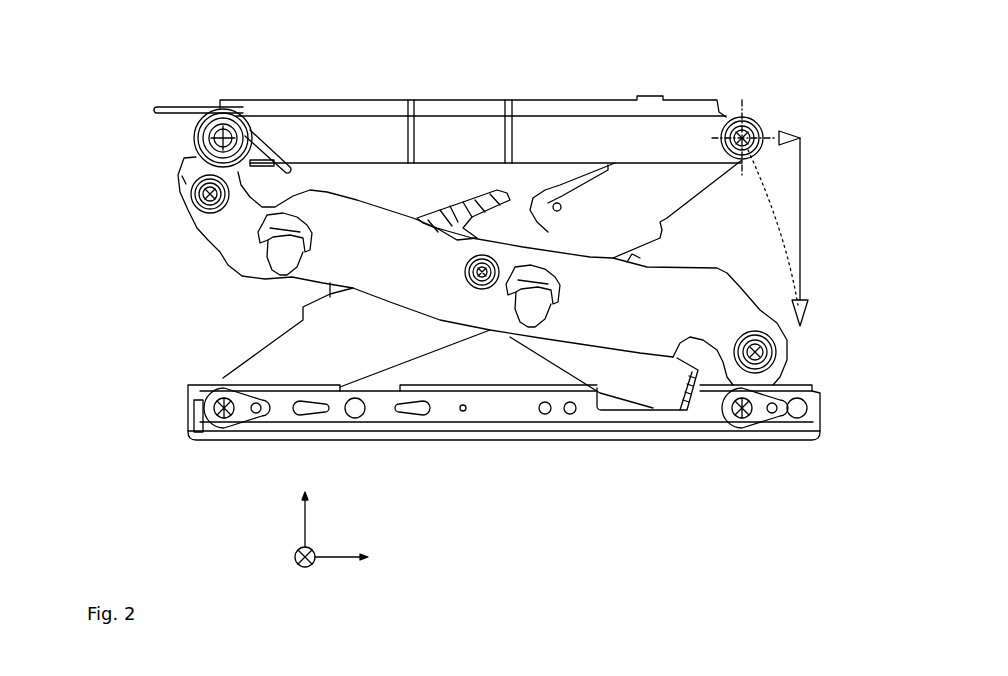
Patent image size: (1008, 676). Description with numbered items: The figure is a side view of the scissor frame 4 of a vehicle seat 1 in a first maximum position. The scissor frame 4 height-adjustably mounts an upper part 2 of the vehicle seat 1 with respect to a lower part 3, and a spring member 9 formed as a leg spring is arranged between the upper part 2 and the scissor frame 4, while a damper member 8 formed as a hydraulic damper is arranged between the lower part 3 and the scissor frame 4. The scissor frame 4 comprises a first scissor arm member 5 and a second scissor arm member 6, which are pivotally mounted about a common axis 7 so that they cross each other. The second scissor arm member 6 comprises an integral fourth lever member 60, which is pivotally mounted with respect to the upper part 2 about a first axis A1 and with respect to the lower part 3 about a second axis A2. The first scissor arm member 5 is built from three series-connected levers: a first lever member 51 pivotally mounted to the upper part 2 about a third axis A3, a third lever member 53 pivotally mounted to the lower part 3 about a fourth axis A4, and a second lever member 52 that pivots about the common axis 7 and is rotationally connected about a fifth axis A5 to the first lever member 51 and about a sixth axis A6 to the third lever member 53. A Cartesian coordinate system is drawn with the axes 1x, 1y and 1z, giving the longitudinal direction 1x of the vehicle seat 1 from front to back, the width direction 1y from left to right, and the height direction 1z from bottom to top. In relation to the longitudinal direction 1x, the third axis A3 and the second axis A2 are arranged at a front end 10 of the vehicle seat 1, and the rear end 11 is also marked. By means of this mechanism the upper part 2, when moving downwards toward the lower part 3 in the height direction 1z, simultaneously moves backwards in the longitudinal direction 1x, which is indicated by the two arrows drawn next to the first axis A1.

The vehicle seat 1 is at (89, 143).
The upper part 2 is at (552, 105).
The lower part 3 is at (566, 425).
The scissor frame 4 is at (111, 376).
The first scissor arm member 5 is at (198, 268).
The second scissor arm member 6 is at (187, 358).
The common axis 7 is at (476, 281).
The damper member 8 is at (655, 402).
The spring member 9 is at (178, 107).
The front end 10 is at (89, 242).
The rear end 11 is at (843, 232).
The first lever member 51 is at (180, 178).
The second lever member 52 is at (340, 212).
The third lever member 53 is at (776, 376).
The fourth lever member 60 is at (260, 364).
The first axis A1 is at (752, 122).
The second axis A2 is at (222, 416).
The third axis A3 is at (198, 149).
The fourth axis A4 is at (741, 422).
The fifth axis A5 is at (195, 215).
The sixth axis A6 is at (765, 344).
The longitudinal direction 1x is at (770, 132).
The width direction 1y is at (298, 563).
The height direction 1z is at (803, 186).